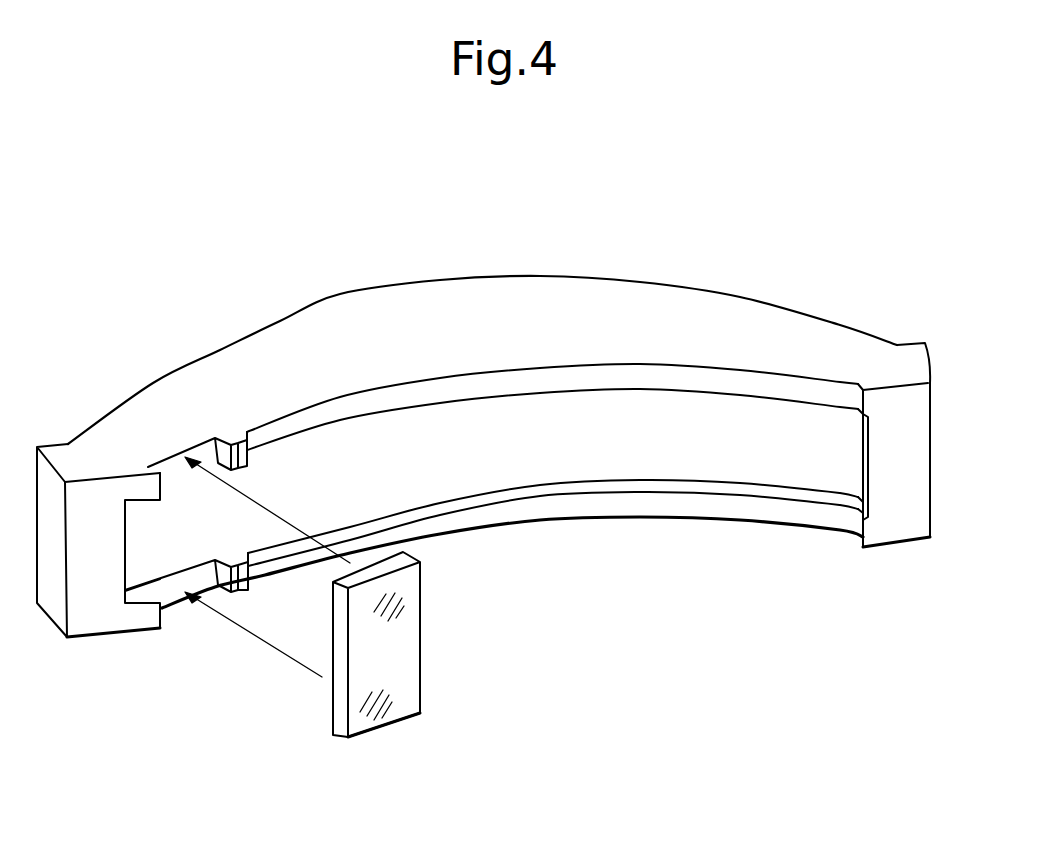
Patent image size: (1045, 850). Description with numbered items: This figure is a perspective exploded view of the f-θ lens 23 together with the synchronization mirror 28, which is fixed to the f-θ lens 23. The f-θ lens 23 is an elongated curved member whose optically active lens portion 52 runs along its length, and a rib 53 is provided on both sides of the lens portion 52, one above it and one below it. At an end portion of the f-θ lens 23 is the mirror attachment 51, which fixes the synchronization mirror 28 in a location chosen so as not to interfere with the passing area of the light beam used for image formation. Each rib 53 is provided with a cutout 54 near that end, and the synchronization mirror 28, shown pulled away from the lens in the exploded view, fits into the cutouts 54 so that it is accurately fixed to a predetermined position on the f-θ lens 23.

The f-θ lens 23 is at (743, 279).
The synchronization mirror 28 is at (442, 653).
The mirror attachment 51 is at (192, 616).
The lens portion 52 is at (718, 452).
The rib 53 is at (580, 377).
The cutout 54 is at (175, 590).